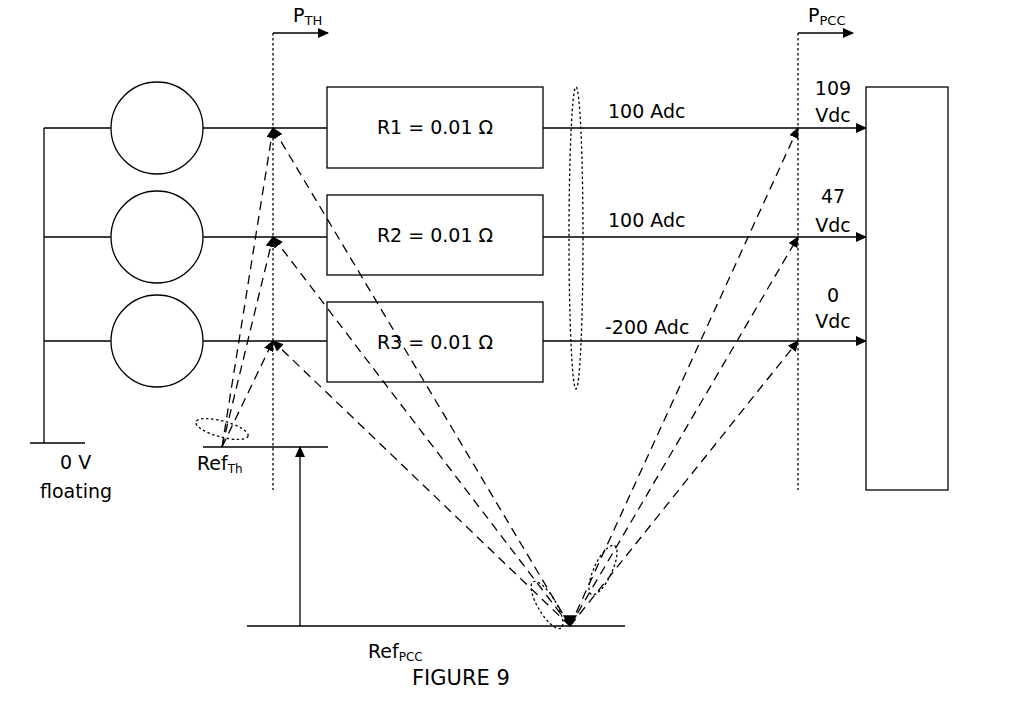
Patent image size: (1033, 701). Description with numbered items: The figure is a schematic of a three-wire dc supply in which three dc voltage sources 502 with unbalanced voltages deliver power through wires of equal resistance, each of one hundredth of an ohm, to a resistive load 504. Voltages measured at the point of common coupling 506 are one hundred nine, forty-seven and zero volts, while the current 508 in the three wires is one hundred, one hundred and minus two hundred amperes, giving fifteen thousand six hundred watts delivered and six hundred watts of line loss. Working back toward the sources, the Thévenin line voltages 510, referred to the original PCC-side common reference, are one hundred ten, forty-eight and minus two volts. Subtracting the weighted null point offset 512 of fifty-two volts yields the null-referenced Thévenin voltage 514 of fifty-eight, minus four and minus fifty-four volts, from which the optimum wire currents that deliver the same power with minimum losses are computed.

The dc voltage sources 502 is at (118, 305).
The resistive load 504 is at (907, 288).
The point of common coupling 506 is at (622, 582).
The current 508 is at (577, 90).
The Thévenin line voltages 510 is at (527, 616).
The weighted null point offset 512 is at (300, 553).
The null-referenced Thévenin voltage 514 is at (200, 433).